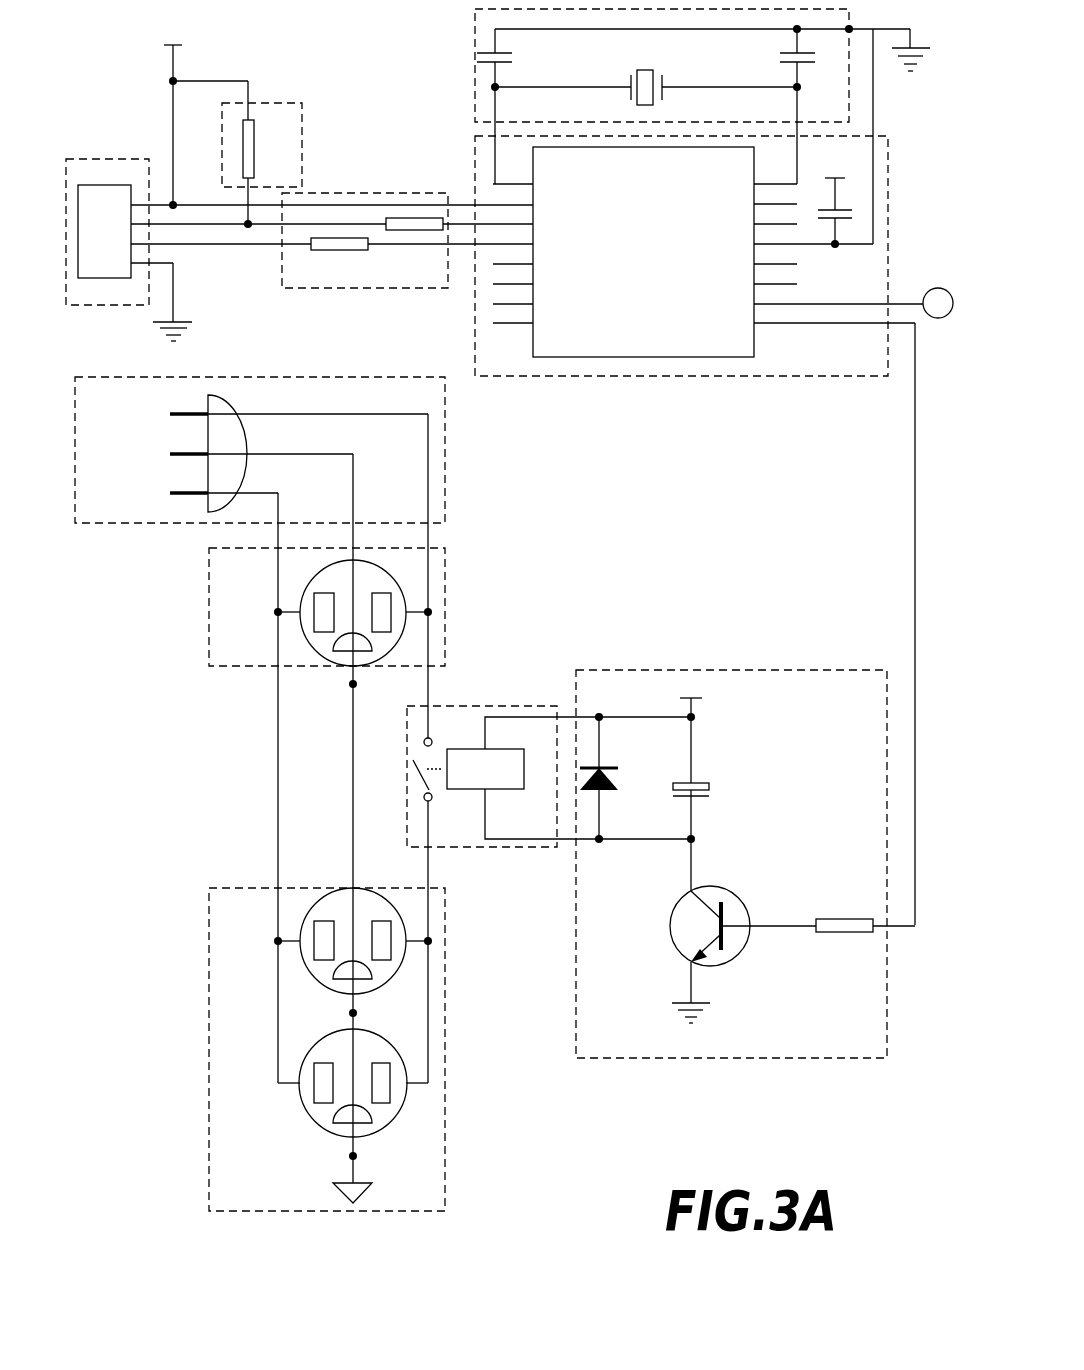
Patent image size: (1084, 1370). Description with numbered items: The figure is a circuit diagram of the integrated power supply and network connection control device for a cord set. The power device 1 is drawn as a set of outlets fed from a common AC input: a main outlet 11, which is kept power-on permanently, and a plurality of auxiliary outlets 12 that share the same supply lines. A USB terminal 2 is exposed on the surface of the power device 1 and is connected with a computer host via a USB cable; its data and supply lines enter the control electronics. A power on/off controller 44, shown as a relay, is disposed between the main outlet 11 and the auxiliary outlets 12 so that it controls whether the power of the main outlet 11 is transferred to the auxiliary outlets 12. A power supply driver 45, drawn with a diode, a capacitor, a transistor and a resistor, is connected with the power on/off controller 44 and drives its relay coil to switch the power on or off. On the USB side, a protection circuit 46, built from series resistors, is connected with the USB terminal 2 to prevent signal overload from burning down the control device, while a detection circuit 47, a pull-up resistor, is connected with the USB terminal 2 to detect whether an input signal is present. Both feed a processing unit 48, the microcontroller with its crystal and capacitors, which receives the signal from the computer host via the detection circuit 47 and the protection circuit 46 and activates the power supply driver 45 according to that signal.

The power device 1 is at (210, 782).
The USB terminal 2 is at (105, 160).
The main outlet 11 is at (380, 581).
The auxiliary outlets 12 is at (380, 972).
The power on/off controller 44 is at (503, 847).
The power supply driver 45 is at (828, 670).
The protection circuit 46 is at (410, 193).
The detection circuit 47 is at (275, 102).
The processing unit 48 is at (759, 377).